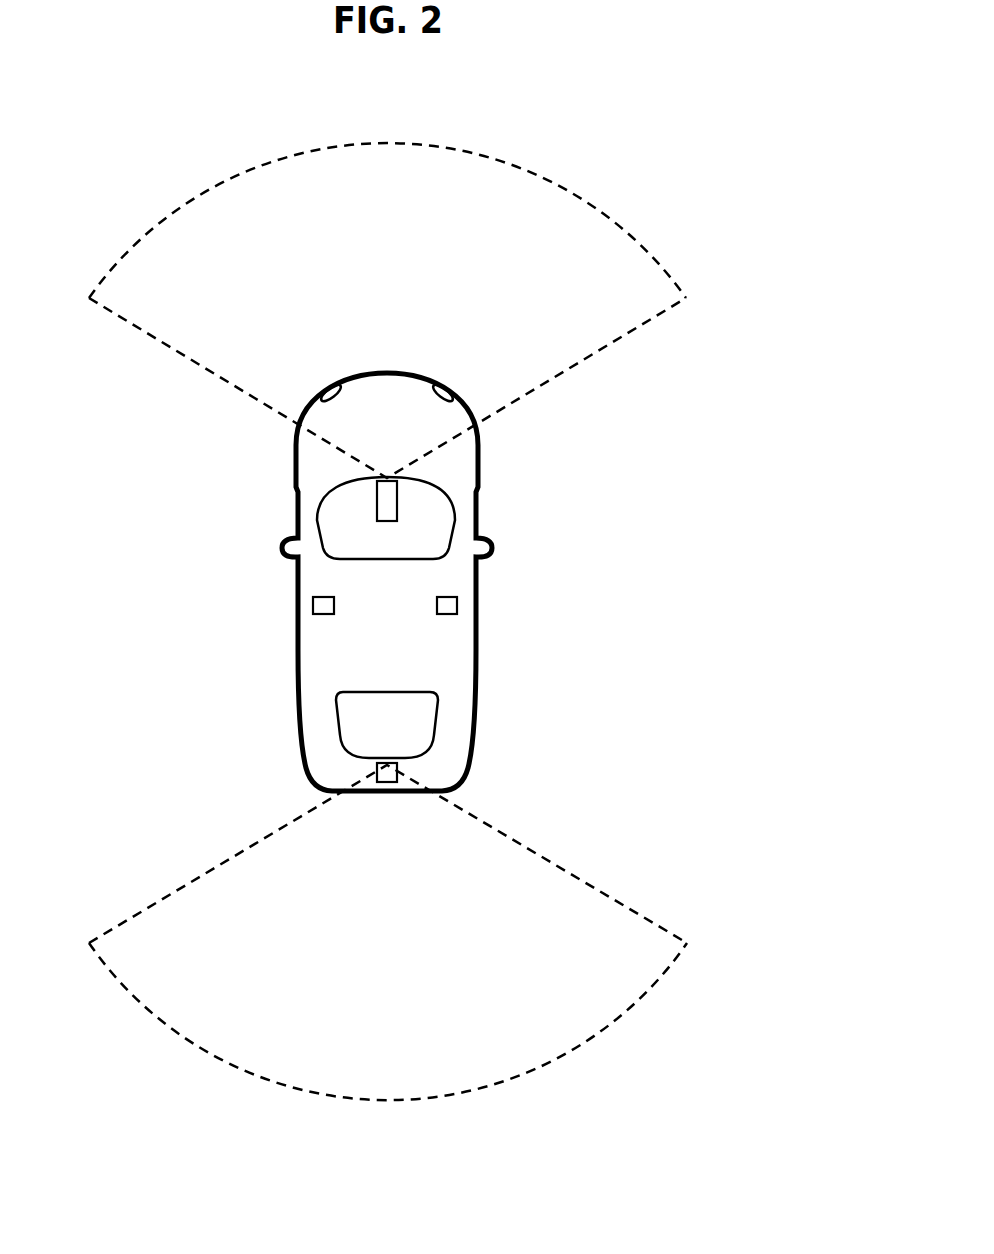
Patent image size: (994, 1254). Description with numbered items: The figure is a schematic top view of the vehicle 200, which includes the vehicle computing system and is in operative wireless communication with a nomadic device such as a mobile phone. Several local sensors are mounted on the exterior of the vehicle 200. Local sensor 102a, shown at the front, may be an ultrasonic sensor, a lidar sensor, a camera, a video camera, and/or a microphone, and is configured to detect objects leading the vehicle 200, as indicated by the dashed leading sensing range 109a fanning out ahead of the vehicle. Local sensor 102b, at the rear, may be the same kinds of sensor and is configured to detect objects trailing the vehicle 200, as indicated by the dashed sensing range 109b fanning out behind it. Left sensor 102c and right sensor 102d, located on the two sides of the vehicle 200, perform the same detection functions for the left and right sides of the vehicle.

The vehicle 200 is at (727, 133).
The local sensor 102a is at (387, 505).
The local sensor 102b is at (387, 771).
The left sensor 102c is at (323, 604).
The right sensor 102d is at (448, 605).
The leading sensing range 109a is at (662, 318).
The sensing range 109b is at (663, 930).